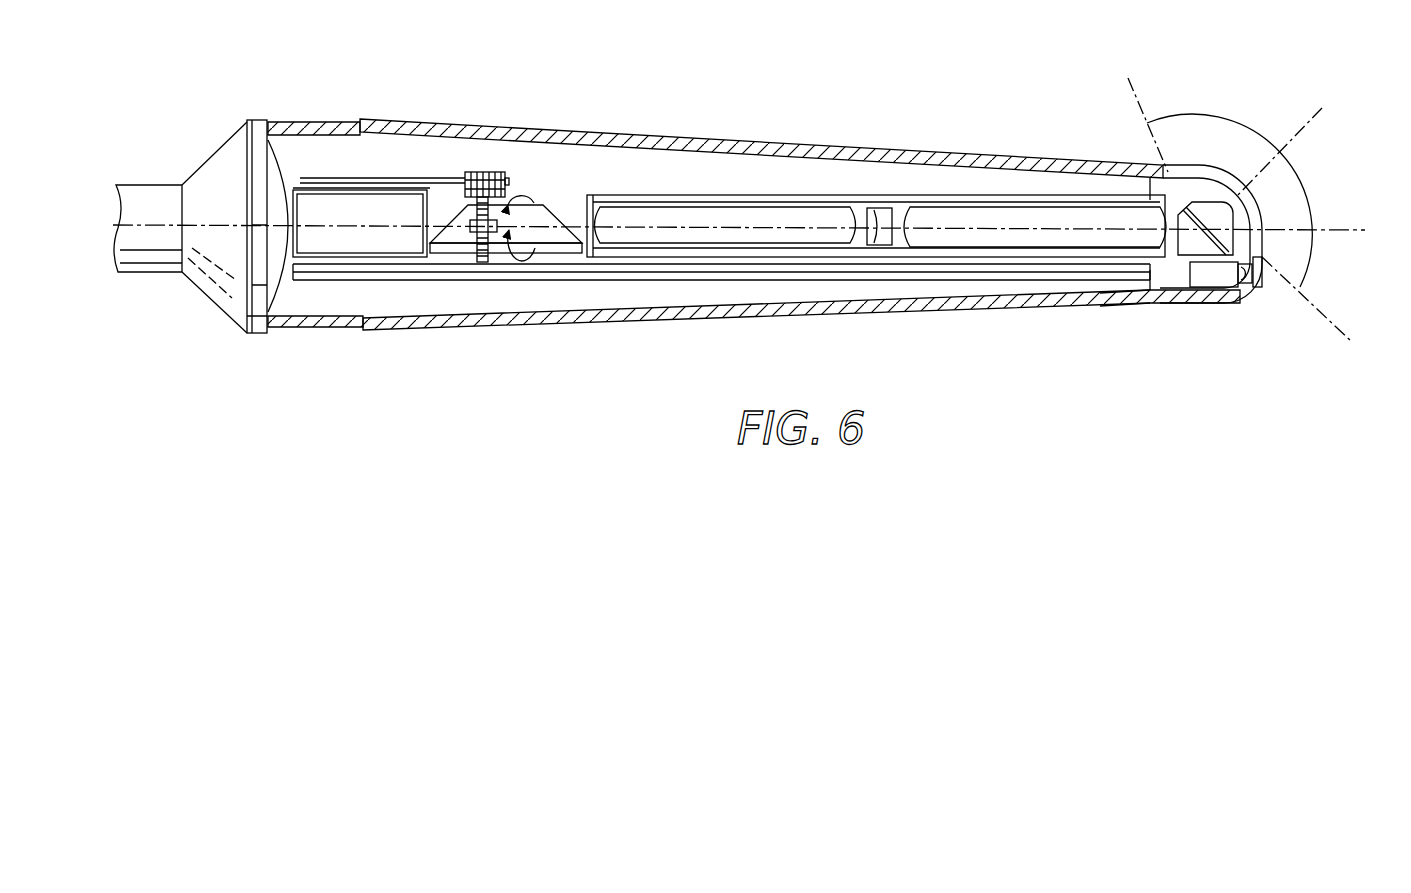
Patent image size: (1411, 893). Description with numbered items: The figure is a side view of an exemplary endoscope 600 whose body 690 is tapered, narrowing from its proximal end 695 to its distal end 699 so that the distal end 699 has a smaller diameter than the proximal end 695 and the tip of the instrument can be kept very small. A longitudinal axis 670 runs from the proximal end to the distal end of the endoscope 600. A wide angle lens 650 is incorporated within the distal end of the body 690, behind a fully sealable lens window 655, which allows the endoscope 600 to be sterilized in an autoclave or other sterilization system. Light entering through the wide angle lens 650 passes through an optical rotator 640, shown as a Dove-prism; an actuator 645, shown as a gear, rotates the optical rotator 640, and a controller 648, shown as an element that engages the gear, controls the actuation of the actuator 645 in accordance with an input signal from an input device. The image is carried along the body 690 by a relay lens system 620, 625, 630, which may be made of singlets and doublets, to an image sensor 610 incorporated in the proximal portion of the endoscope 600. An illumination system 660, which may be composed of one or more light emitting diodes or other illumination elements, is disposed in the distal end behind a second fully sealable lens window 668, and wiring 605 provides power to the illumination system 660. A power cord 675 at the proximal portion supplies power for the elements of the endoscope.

The endoscope 600 is at (646, 117).
The wiring 605 is at (1010, 273).
The image sensor 610 is at (303, 212).
The relay lens system 620 is at (748, 217).
The relay lens system 625 is at (885, 212).
The relay lens system 630 is at (1005, 220).
The optical rotator 640 is at (462, 207).
The actuator 645 is at (480, 262).
The controller 648 is at (482, 177).
The wide angle lens 650 is at (1197, 246).
The lens window 655 is at (1200, 178).
The illumination system 660 is at (1228, 278).
The lens window 668 is at (1262, 273).
The longitudinal axis 670 is at (1345, 227).
The power cord 675 is at (146, 196).
The body 690 is at (686, 313).
The proximal end 695 is at (335, 330).
The distal end 699 is at (1120, 298).